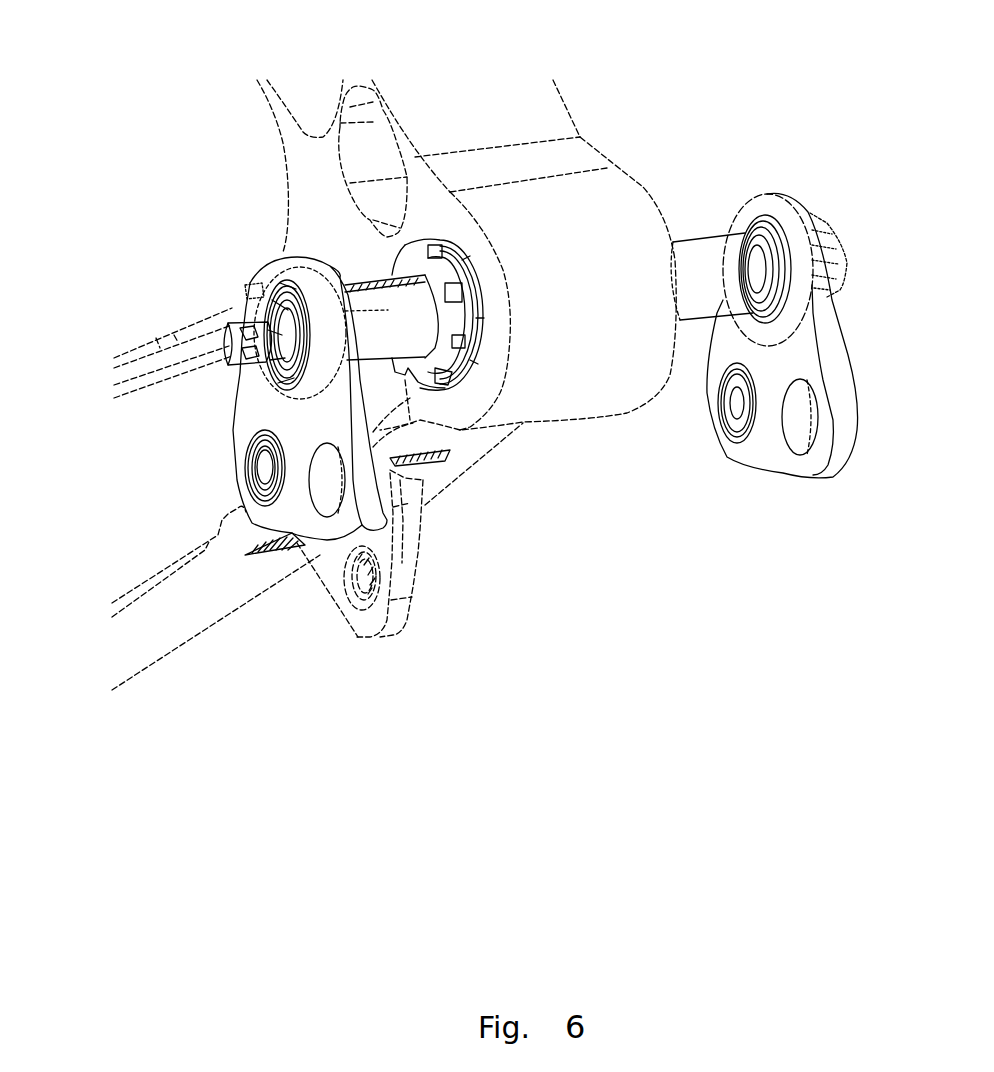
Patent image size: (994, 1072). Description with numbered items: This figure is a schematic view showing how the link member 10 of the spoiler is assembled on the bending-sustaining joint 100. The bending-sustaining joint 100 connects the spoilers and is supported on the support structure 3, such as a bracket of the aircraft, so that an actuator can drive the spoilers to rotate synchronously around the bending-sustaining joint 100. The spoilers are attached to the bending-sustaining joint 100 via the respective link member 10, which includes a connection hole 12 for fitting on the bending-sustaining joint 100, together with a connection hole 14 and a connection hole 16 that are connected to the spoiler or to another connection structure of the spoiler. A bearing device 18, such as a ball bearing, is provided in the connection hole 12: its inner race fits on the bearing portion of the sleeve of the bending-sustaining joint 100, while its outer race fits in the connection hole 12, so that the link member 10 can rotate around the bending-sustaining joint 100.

The support structure 3 is at (527, 120).
The link member 10 is at (295, 515).
The connection hole 12 is at (280, 270).
The connection hole 14 is at (248, 470).
The connection hole 16 is at (330, 490).
The bearing device 18 is at (280, 275).
The bending-sustaining joint 100 is at (683, 378).